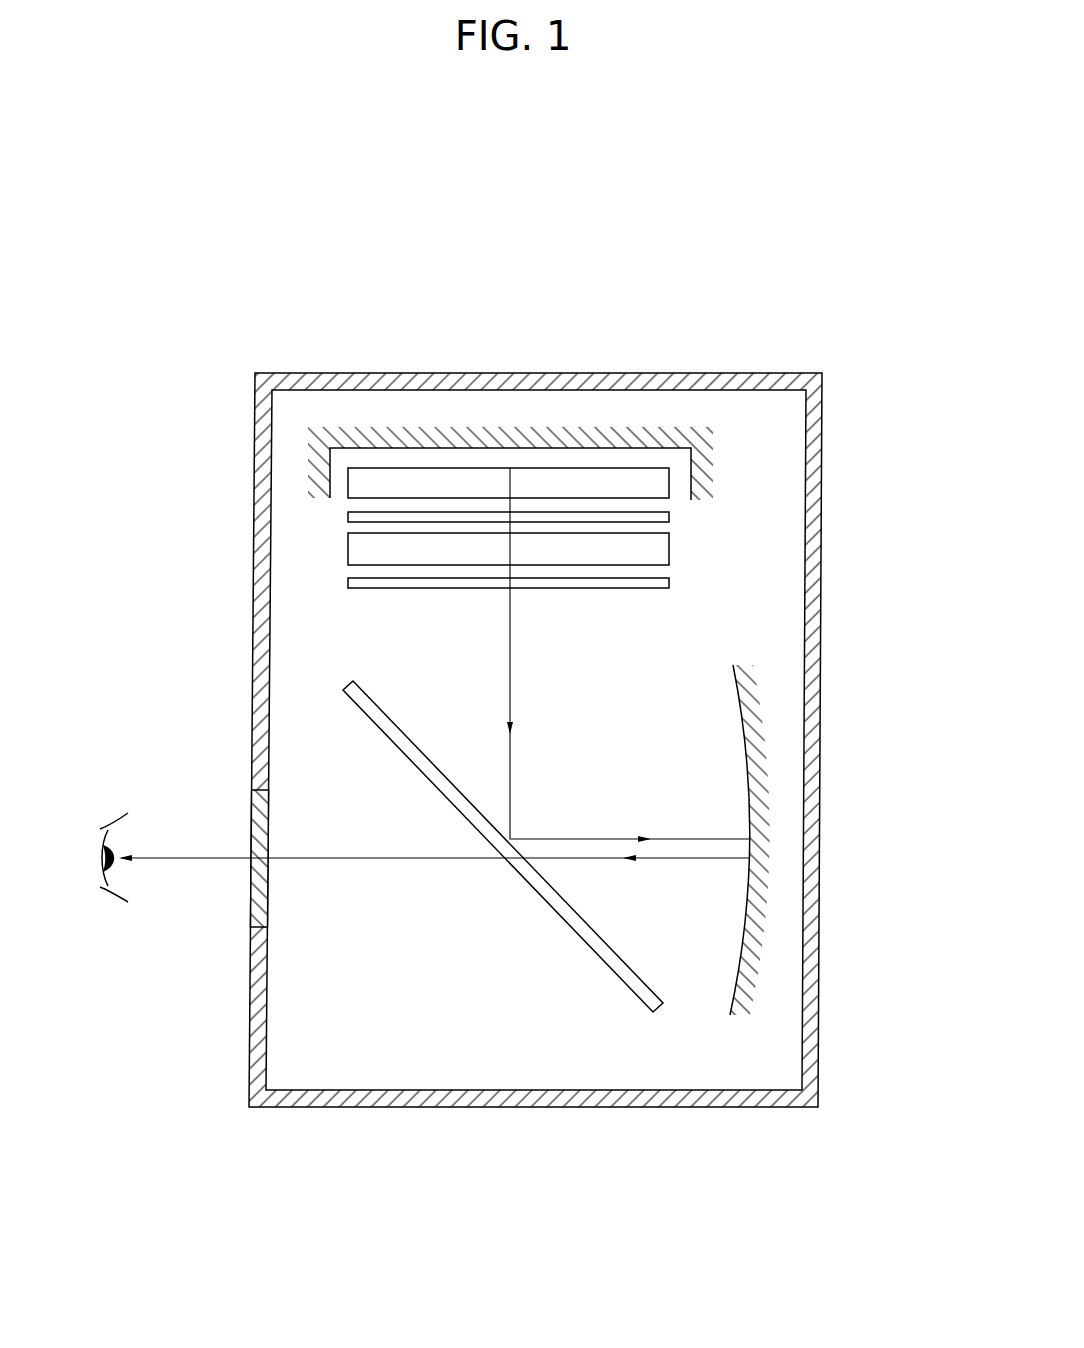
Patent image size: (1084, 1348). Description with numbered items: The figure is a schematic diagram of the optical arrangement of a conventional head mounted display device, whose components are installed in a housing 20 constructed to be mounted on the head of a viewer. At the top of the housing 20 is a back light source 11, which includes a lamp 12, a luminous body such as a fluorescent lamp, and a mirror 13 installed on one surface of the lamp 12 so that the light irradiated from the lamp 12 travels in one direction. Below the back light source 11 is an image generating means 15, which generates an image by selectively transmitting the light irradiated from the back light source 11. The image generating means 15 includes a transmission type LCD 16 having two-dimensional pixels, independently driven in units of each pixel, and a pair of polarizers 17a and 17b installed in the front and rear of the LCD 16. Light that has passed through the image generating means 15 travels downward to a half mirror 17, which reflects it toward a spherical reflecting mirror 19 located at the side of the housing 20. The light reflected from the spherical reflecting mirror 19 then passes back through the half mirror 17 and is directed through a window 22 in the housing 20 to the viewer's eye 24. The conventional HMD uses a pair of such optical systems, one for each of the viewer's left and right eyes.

The back light source 11 is at (510, 359).
The lamp 12 is at (467, 480).
The mirror 13 is at (412, 437).
The image generating means 15 is at (655, 551).
The transmission type LCD 16 is at (669, 550).
The polarizer 17a is at (669, 585).
The polarizer 17b is at (669, 517).
The half mirror 17 is at (618, 980).
The spherical reflecting mirror 19 is at (748, 953).
The housing 20 is at (720, 1107).
The window 22 is at (252, 902).
The viewer's eye 24 is at (105, 805).